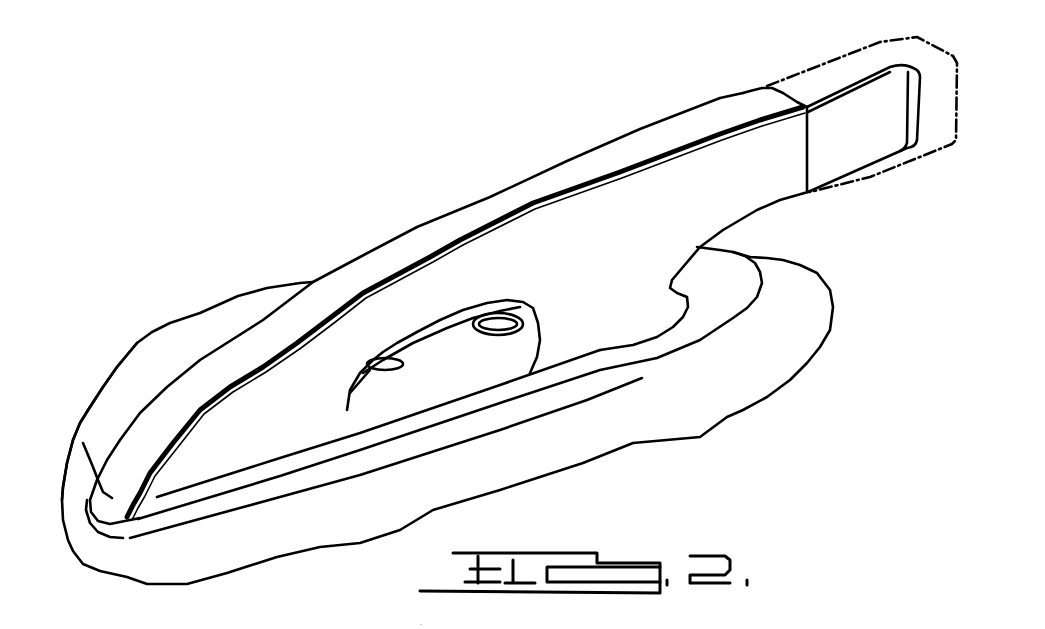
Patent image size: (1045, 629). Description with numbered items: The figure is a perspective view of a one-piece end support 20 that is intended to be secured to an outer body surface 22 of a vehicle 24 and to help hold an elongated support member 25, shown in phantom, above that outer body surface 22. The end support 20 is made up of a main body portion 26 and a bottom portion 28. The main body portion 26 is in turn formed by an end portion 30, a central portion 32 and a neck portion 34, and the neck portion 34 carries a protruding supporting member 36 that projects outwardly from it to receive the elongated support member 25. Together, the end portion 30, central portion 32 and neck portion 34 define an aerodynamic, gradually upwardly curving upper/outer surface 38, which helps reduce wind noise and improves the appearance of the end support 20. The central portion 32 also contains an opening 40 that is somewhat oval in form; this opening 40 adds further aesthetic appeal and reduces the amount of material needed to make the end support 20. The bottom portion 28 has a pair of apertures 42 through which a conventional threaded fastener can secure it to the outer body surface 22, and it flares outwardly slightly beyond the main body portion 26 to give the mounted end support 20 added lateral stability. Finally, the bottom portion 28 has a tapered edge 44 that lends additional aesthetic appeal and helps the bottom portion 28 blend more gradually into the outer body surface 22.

The one-piece end support 20 is at (294, 237).
The outer body surface 22 is at (193, 330).
The vehicle 24 is at (137, 343).
The elongated support member 25 is at (890, 44).
The main body portion 26 is at (598, 148).
The bottom portion 28 is at (713, 300).
The end portion 30 is at (103, 478).
The central portion 32 is at (529, 190).
The neck portion 34 is at (744, 102).
The protruding supporting member 36 is at (857, 133).
The upper/outer surface 38 is at (413, 235).
The opening 40 is at (490, 346).
The apertures 42 is at (497, 333).
The tapered edge 44 is at (643, 363).